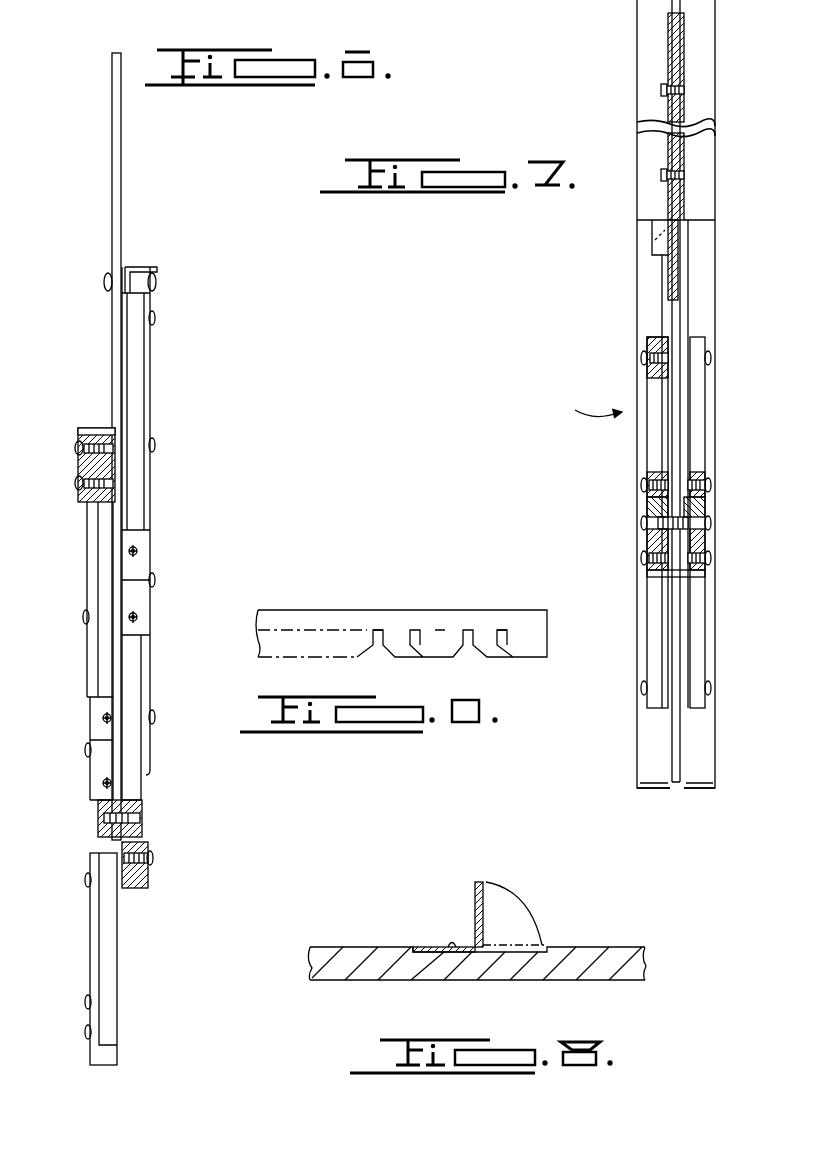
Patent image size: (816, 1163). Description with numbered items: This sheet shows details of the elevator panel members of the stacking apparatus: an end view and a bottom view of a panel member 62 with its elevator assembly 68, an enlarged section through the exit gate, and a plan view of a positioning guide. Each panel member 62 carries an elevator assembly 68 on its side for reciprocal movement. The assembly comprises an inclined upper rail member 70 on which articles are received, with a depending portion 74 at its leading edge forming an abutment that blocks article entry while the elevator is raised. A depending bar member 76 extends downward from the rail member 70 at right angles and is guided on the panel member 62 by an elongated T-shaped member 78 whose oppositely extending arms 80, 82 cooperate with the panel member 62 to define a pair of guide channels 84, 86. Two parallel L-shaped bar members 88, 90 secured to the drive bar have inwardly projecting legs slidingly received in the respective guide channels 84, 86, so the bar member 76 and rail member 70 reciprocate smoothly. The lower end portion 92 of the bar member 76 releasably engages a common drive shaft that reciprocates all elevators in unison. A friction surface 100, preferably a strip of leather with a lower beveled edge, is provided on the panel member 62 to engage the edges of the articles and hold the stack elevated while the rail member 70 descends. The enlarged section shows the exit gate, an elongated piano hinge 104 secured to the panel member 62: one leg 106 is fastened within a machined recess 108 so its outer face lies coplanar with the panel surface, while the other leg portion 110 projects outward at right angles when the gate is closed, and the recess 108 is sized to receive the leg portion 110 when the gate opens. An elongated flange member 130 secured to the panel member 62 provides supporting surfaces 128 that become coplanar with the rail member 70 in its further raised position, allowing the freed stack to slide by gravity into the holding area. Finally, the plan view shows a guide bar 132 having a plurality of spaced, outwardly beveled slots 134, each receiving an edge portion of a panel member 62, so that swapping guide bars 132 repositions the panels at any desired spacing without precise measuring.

In FIG. 6, the panel member 62 is at (122, 168).
In FIG. 7, the panel member 62 is at (680, 275).
In FIG. 8, the panel member 62 is at (365, 976).
In FIG. 7, the elevator assembly 68 is at (591, 401).
In FIG. 6, the upper rail member 70 is at (135, 267).
In FIG. 7, the upper rail member 70 is at (635, 296).
In FIG. 7, the depending portion 74 is at (663, 790).
In FIG. 6, the depending bar member 76 is at (150, 500).
In FIG. 7, the depending bar member 76 is at (645, 522).
In FIG. 7, the T-shaped member 78 is at (705, 505).
In FIG. 7, the arm 80 is at (650, 550).
In FIG. 7, the arm 82 is at (650, 505).
In FIG. 7, the guide channel 84 is at (705, 550).
In FIG. 7, the guide channel 86 is at (705, 478).
In FIG. 7, the L-shaped bar member 88 is at (660, 577).
In FIG. 7, the L-shaped bar member 90 is at (647, 478).
In FIG. 6, the lower end portion 92 is at (148, 885).
In FIG. 6, the friction surface 100 is at (105, 281).
In FIG. 7, the piano hinge 104 is at (650, 240).
In FIG. 8, the piano hinge 104 is at (452, 922).
In FIG. 8, the leg 106 is at (443, 944).
In FIG. 8, the recess 108 is at (455, 952).
In FIG. 8, the leg portion 110 is at (475, 890).
In FIG. 7, the supporting surfaces 128 is at (712, 58).
In FIG. 7, the elongated flange member 130 is at (685, 108).
In FIG. 9, the guide bar 132 is at (385, 620).
In FIG. 9, the slot 134 is at (503, 630).